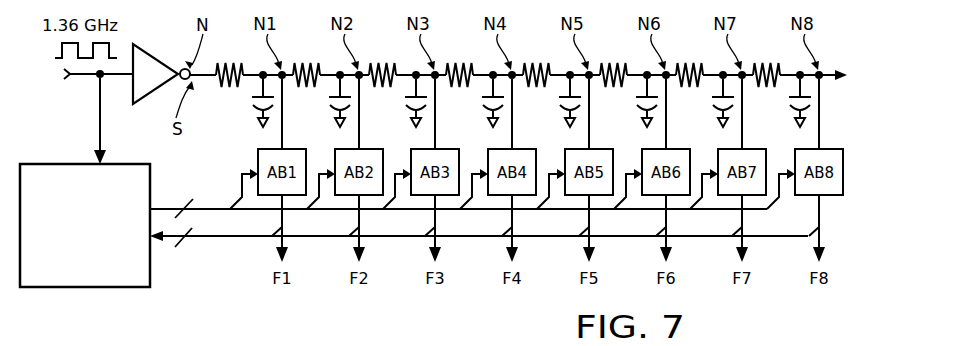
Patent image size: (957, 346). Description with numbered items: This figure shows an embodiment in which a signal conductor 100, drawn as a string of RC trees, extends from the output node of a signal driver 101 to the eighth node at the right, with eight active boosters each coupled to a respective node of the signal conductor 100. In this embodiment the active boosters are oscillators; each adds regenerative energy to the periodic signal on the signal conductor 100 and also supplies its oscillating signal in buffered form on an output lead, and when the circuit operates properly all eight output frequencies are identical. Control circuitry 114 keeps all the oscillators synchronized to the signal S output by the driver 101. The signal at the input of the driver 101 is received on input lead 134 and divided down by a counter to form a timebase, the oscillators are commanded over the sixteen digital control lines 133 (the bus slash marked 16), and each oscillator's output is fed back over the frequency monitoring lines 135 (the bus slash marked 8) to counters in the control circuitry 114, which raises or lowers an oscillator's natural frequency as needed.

The signal conductor 100 is at (206, 74).
The signal driver 101 is at (141, 46).
The control circuitry 114 is at (72, 214).
The input lead 134 is at (102, 148).
The control lines 133 is at (199, 207).
The bus width 16 is at (185, 200).
The frequency monitoring lines 135 is at (195, 239).
The bus width 8 is at (183, 246).